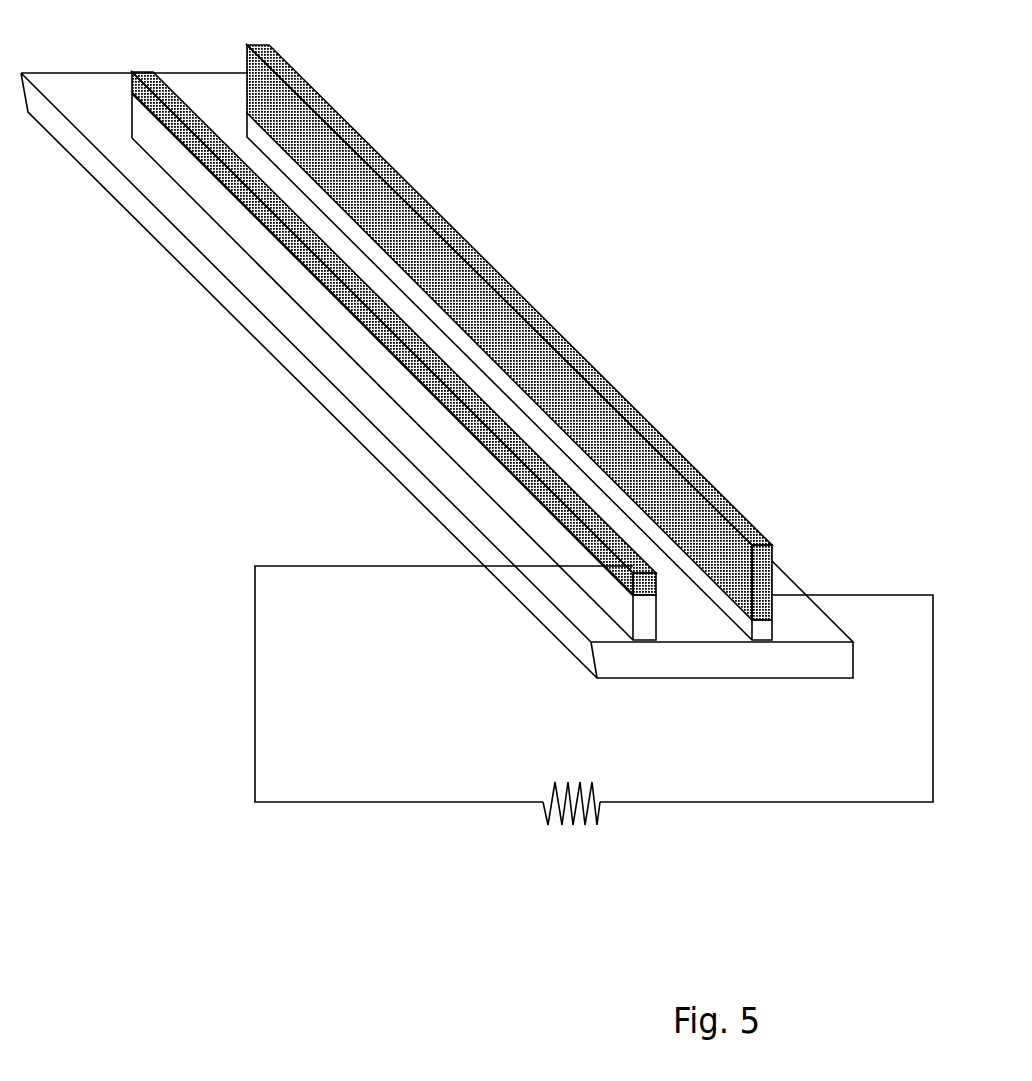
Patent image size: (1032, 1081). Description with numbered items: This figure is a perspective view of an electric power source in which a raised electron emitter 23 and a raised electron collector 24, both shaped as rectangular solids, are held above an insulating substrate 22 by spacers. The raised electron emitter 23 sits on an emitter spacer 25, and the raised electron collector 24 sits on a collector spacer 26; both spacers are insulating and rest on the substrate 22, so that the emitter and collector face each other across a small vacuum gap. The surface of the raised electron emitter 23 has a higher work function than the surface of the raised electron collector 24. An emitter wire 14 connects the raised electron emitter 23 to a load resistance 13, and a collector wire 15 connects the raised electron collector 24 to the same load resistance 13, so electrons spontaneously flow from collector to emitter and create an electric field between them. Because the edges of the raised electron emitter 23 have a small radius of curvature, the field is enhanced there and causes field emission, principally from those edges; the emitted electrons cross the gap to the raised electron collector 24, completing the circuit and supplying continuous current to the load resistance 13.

The load resistance 13 is at (584, 828).
The emitter wire 14 is at (328, 817).
The collector wire 15 is at (852, 818).
The substrate 22 is at (377, 460).
The raised electron emitter 23 is at (307, 262).
The raised electron collector 24 is at (342, 100).
The emitter spacer 25 is at (207, 205).
The collector spacer 26 is at (763, 633).